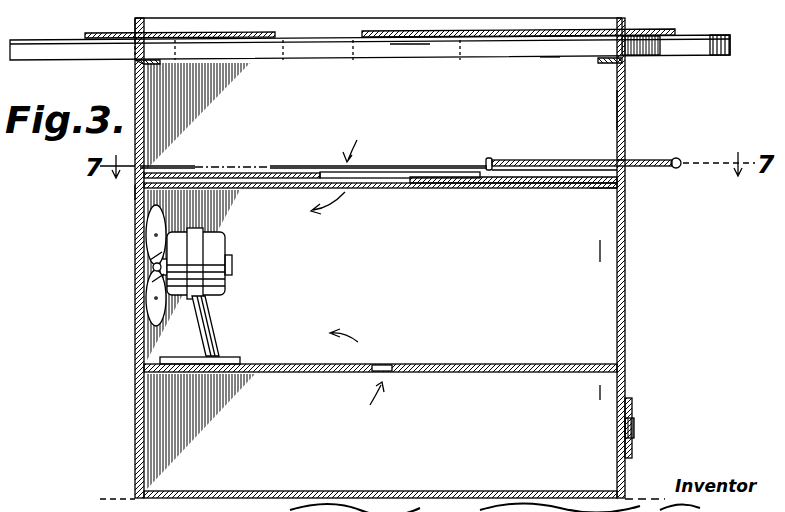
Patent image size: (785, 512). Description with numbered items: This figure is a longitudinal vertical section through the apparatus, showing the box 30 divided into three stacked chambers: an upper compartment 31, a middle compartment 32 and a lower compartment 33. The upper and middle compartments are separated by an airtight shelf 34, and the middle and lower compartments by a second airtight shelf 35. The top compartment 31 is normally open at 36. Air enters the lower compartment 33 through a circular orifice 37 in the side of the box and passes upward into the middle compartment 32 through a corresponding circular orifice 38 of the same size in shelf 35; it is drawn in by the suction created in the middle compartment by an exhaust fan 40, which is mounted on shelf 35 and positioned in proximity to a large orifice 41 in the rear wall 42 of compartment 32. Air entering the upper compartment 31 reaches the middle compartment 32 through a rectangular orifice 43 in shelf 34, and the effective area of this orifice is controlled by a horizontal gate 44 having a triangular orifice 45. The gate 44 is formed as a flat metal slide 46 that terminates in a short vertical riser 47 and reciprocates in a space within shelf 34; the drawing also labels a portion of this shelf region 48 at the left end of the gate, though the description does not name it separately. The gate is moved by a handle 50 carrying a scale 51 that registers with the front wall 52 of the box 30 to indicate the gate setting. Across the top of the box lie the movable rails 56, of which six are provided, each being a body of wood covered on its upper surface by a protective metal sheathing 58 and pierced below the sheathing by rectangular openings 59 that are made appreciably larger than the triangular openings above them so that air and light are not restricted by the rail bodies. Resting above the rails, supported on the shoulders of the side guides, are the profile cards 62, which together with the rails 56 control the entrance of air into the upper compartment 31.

The box 30 is at (634, 272).
The upper compartment 31 is at (607, 110).
The middle compartment 32 is at (607, 252).
The lower compartment 33 is at (610, 394).
The airtight shelf 34 is at (596, 190).
The airtight shelf 35 is at (557, 364).
The open top 36 is at (555, 62).
The circular orifice 37 is at (672, 427).
The circular orifice 38 is at (394, 361).
The exhaust fan 40 is at (202, 330).
The large orifice 41 is at (131, 308).
The rear wall 42 is at (128, 200).
The rectangular orifice 43 is at (386, 189).
The horizontal gate 44 is at (506, 185).
The triangular orifice 45 is at (389, 170).
The flat metal slide 46 is at (432, 187).
The short vertical riser 47 is at (490, 158).
The shelf section 48 is at (188, 174).
The handle 50 is at (682, 162).
The scale 51 is at (590, 161).
The front wall 52 is at (624, 163).
The movable rails 56 is at (720, 36).
The metal sheathing 58 is at (58, 41).
The rectangular openings 59 is at (412, 50).
The profile cards 62 is at (648, 31).